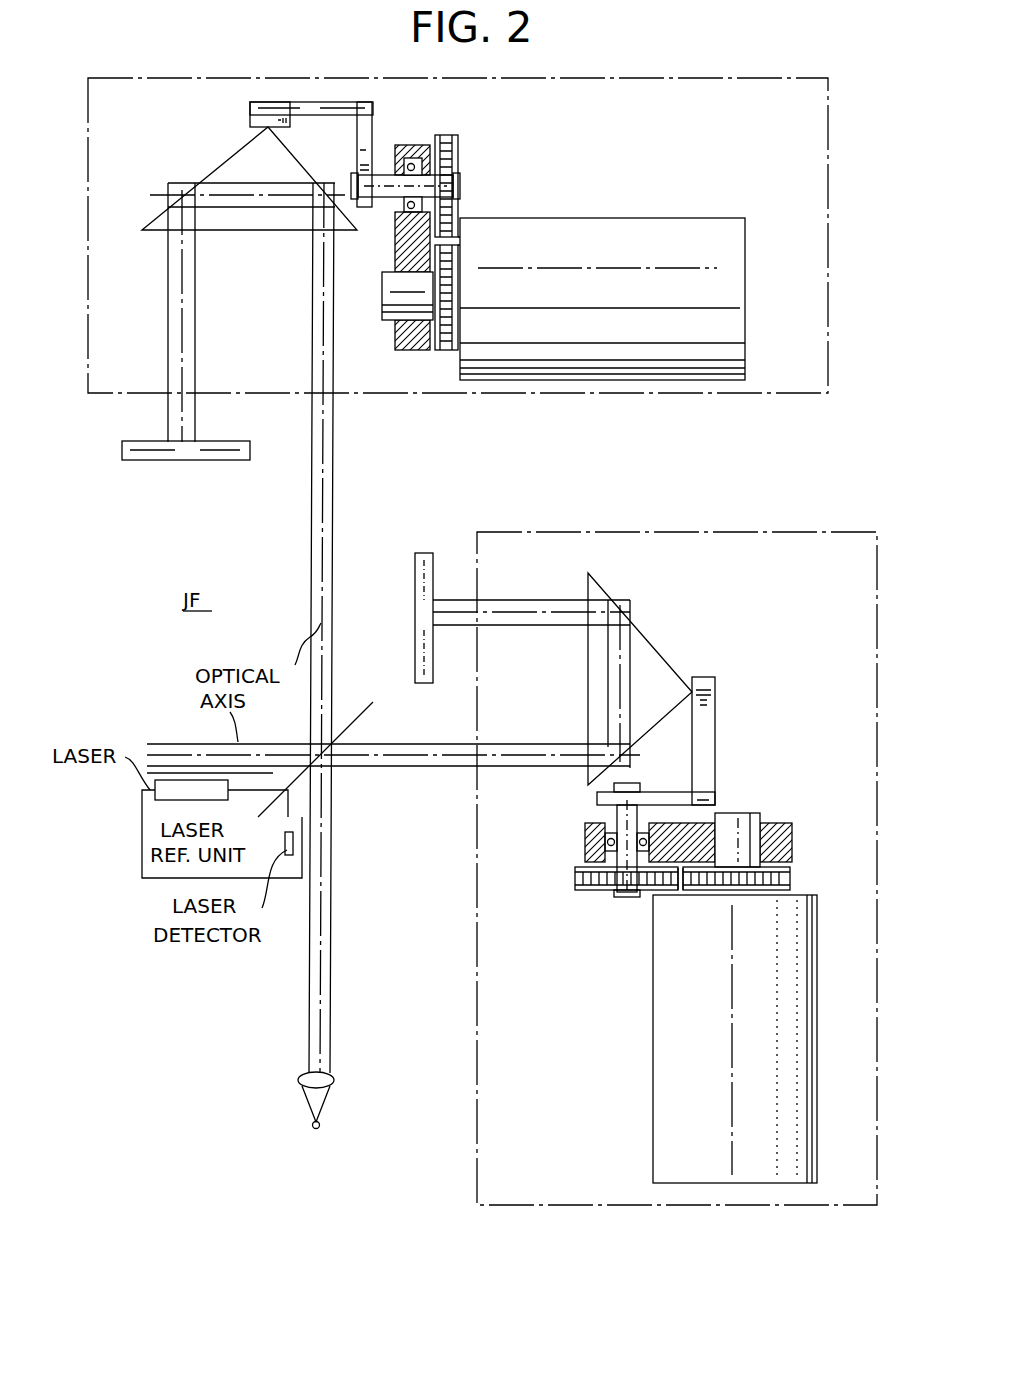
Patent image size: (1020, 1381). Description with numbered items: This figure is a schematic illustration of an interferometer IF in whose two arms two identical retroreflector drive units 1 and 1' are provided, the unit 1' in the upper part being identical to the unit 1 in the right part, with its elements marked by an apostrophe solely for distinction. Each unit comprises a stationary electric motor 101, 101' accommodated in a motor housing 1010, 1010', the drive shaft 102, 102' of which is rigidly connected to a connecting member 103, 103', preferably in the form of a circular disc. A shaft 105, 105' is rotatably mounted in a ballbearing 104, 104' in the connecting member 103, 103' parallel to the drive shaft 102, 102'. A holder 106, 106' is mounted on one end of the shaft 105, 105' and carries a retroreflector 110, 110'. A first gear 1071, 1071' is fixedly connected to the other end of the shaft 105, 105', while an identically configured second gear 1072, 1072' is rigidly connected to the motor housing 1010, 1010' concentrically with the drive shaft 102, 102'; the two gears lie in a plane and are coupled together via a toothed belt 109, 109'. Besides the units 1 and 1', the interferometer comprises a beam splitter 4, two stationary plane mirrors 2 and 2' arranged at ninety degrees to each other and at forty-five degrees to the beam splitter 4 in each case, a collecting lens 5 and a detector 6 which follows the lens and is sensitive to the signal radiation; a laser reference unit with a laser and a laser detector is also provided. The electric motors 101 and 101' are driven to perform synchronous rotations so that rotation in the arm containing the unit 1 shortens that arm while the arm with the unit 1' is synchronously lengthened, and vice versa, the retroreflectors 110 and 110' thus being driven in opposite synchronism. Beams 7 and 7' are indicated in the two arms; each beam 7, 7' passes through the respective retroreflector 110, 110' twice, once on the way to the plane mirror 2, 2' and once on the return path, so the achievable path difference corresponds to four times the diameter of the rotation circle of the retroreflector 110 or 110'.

The unit 1 is at (677, 845).
The unit 1' is at (458, 261).
The stationary plane mirror 2 is at (401, 608).
The stationary plane mirror 2' is at (186, 474).
The beam splitter 4 is at (357, 717).
The collecting lens 5 is at (330, 1083).
The detector 6 is at (320, 1128).
The beam 7 is at (393, 684).
The beam 7' is at (266, 628).
The stationary electric motor 101 is at (700, 1039).
The stationary electric motor 101' is at (603, 276).
The drive shaft 102 is at (762, 817).
The drive shaft 102' is at (386, 315).
The connecting member 103 is at (756, 842).
The connecting member 103' is at (395, 301).
The ballbearing 104 is at (584, 842).
The ballbearing 104' is at (420, 156).
The shaft 105 is at (588, 840).
The shaft 105' is at (403, 220).
The holder 106 is at (693, 741).
The holder 106' is at (311, 154).
The first gear 1071 is at (601, 899).
The second gear 1072 is at (779, 883).
The first gear 1071' is at (491, 182).
The second gear 1072' is at (491, 297).
The toothed belt 109 is at (697, 909).
The toothed belt 109' is at (495, 249).
The retroreflector 110 is at (644, 679).
The retroreflector 110' is at (249, 178).
The motor housing 1010 is at (651, 1040).
The motor housing 1010' is at (597, 220).